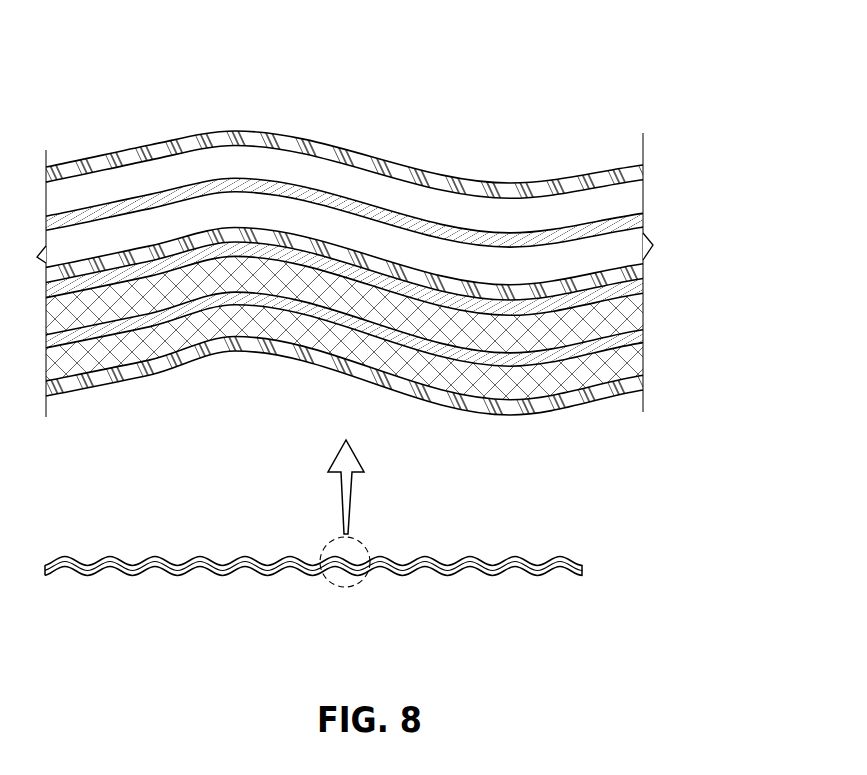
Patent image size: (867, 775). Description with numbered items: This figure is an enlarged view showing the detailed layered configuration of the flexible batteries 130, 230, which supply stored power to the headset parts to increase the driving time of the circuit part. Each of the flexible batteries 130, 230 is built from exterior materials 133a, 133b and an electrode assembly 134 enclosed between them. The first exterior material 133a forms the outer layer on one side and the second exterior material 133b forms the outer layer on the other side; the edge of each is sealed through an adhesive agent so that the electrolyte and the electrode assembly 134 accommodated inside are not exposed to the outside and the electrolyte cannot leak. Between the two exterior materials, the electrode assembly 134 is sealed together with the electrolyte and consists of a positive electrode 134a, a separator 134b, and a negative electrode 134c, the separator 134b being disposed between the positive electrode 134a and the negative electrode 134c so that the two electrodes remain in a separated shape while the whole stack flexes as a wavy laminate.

The flexible battery 130 is at (243, 107).
The flexible battery 230 is at (243, 532).
The first exterior material 133a is at (637, 170).
The second exterior material 133b is at (636, 408).
The electrode assembly 134 is at (740, 222).
The positive electrode 134a is at (655, 177).
The separator 134b is at (655, 261).
The negative electrode 134c is at (655, 291).